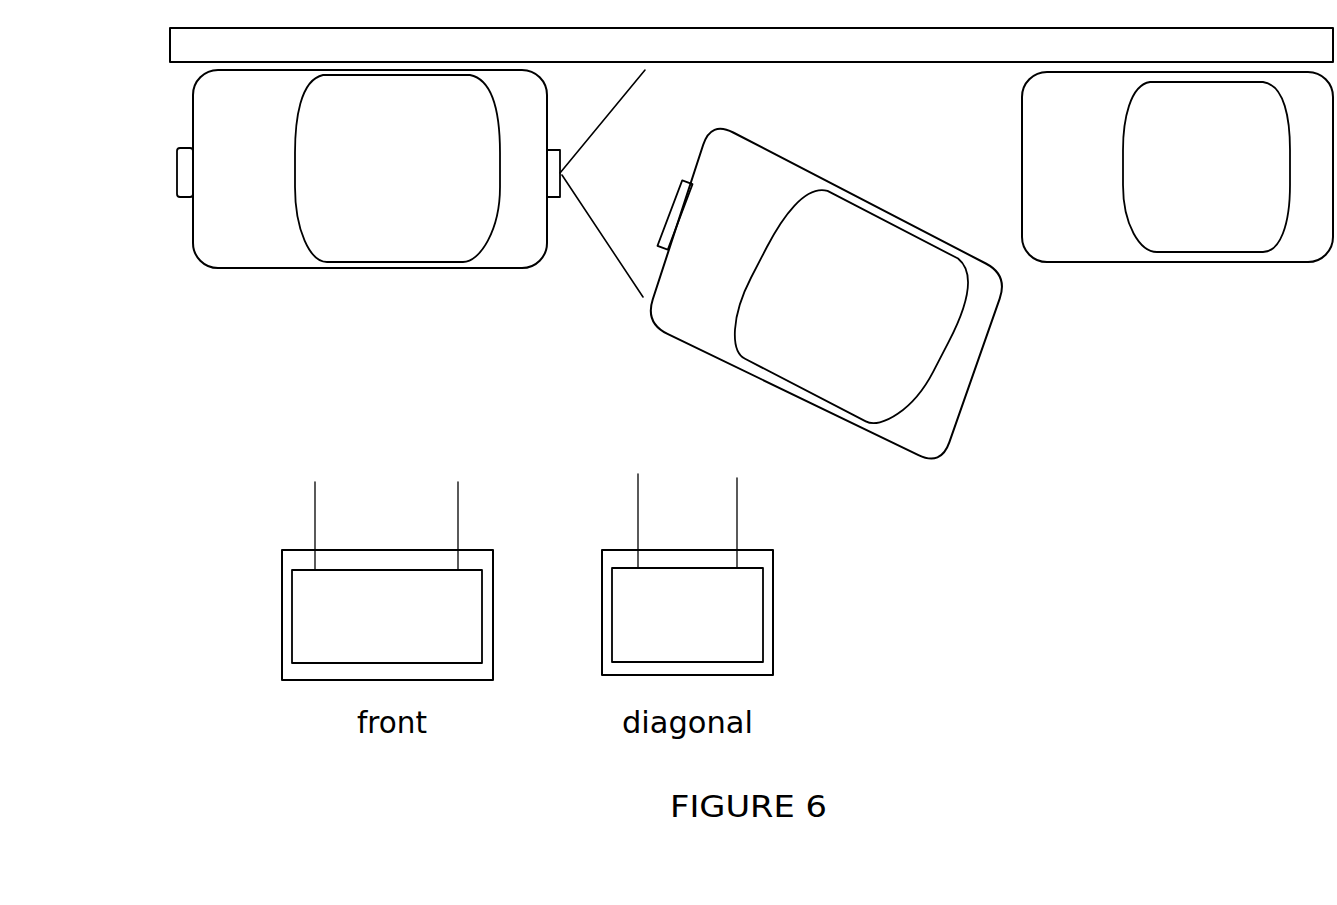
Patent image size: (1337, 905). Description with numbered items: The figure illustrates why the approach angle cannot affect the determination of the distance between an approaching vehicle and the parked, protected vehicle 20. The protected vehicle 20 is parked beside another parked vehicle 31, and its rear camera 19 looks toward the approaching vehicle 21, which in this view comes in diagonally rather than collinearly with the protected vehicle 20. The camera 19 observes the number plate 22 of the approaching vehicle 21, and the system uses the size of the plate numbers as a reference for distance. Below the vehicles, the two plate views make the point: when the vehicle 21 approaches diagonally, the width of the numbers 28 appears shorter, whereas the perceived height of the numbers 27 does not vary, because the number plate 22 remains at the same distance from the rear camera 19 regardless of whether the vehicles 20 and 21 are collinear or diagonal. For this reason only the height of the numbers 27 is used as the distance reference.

The rear camera 19 is at (566, 200).
The protected vehicle 20 is at (362, 169).
The vehicle 21 is at (826, 294).
The number plate 22 is at (657, 218).
The height of the numbers 27 is at (303, 597).
The width of the numbers 28 is at (458, 517).
The another parked vehicle 31 is at (1177, 167).